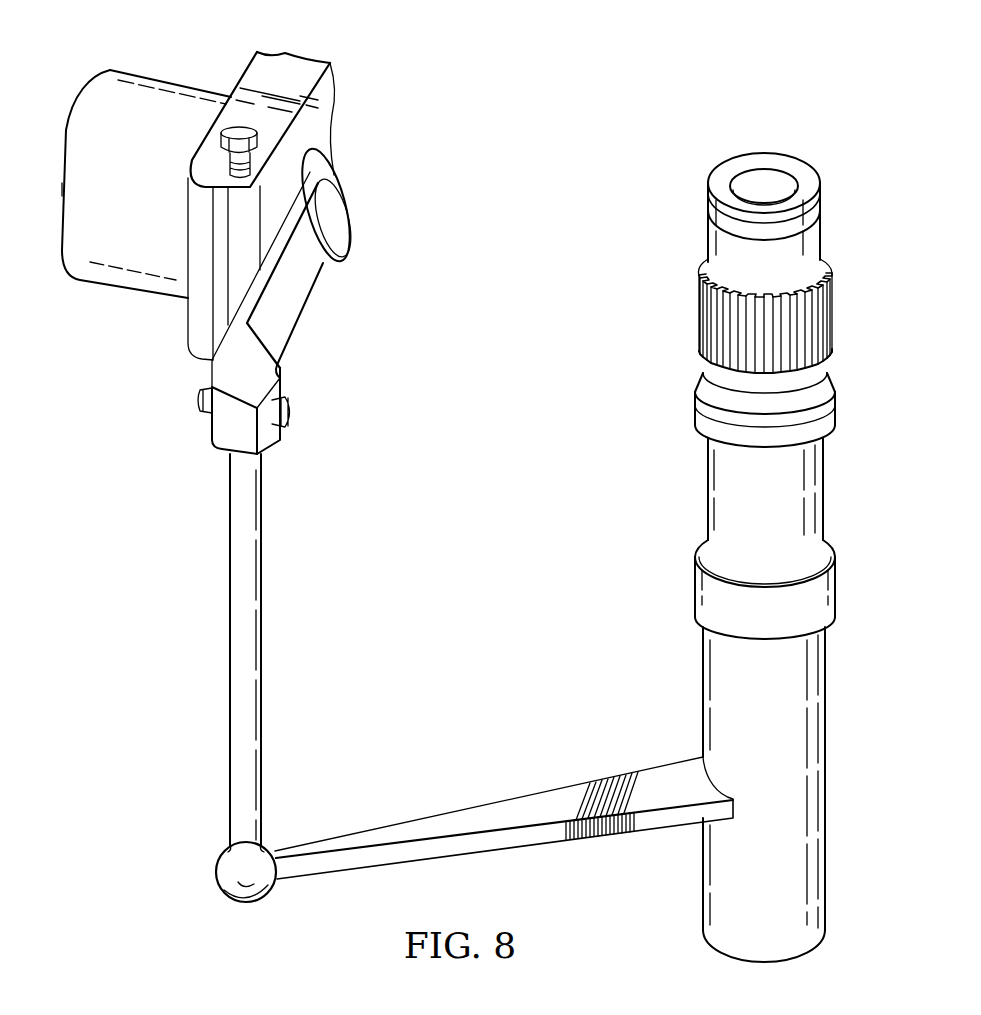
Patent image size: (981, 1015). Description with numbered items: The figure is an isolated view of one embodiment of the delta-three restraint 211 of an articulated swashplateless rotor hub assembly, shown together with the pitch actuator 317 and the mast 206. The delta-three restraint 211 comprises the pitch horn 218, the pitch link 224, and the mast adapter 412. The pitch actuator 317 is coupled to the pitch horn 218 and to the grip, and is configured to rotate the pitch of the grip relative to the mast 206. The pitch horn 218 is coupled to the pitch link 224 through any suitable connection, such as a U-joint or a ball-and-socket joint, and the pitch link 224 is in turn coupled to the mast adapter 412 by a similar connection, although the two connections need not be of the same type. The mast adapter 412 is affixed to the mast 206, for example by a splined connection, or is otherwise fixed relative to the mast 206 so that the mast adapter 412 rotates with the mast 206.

The delta-3 restraint 211 is at (100, 570).
The pitch actuator 317 is at (258, 82).
The pitch horn 218 is at (289, 311).
The pitch link 224 is at (230, 628).
The mast adapter 412 is at (529, 806).
The mast 206 is at (828, 758).